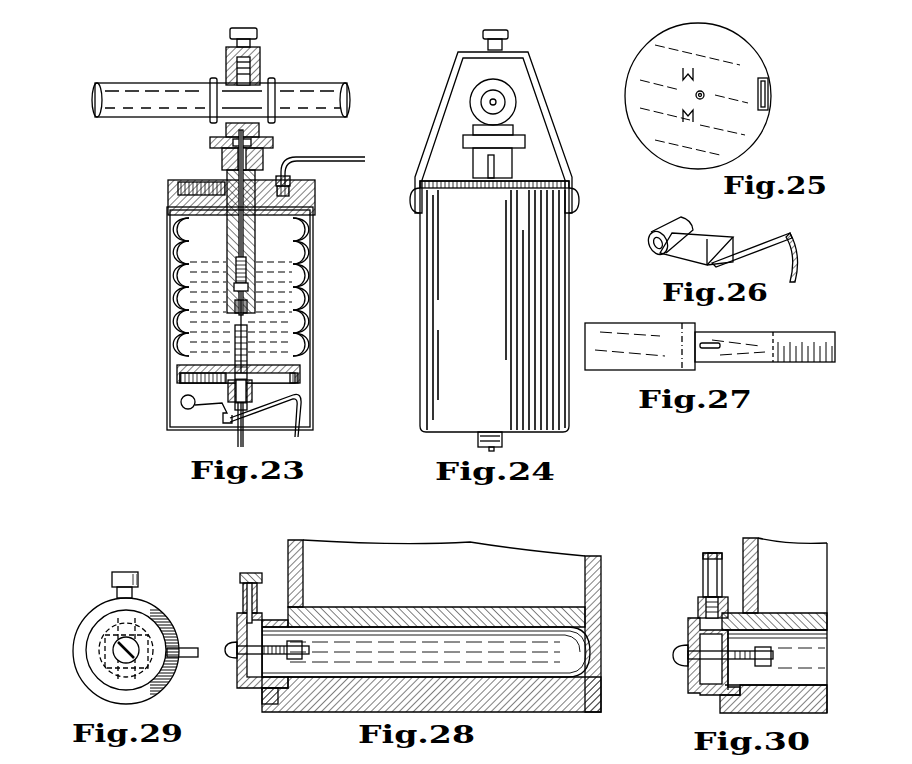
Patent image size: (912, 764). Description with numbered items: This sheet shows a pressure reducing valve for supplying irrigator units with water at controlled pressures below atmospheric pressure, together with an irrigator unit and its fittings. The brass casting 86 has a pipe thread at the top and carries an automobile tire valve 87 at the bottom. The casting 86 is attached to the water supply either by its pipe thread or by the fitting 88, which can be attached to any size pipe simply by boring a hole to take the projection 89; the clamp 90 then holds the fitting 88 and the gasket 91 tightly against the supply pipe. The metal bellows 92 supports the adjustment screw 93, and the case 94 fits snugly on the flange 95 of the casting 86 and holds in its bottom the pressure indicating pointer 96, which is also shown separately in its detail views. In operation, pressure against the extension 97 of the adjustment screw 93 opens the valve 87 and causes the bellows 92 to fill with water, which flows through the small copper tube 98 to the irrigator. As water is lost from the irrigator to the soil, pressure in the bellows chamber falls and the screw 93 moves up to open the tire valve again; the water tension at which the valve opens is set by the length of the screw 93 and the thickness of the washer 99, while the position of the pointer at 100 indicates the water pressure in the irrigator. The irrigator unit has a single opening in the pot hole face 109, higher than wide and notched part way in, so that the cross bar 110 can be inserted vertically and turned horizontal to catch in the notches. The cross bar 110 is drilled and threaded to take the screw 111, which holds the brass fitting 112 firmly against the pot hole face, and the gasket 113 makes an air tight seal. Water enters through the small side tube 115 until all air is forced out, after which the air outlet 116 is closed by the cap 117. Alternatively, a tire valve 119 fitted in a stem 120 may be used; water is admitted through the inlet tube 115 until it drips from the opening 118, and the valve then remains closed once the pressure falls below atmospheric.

In FIG. 23, the brass casting 86 is at (214, 218).
In FIG. 23, the automobile tire valve 87 is at (233, 318).
In FIG. 23, the fitting 88 is at (273, 142).
In FIG. 24, the fitting 88 is at (514, 153).
In FIG. 23, the projection 89 is at (222, 160).
In FIG. 23, the clamp 90 is at (262, 70).
In FIG. 24, the clamp 90 is at (546, 106).
In FIG. 23, the gasket 91 is at (226, 134).
In FIG. 24, the gasket 91 is at (527, 140).
In FIG. 23, the metal bellows 92 is at (172, 262).
In FIG. 23, the adjustment screw 93 is at (233, 342).
In FIG. 23, the case 94 is at (312, 296).
In FIG. 24, the case 94 is at (422, 306).
In FIG. 23, the flange 95 is at (177, 182).
In FIG. 23, the pressure indicating pointer 96 is at (270, 414).
In FIG. 24, the pressure indicating pointer 96 is at (478, 440).
In FIG. 25, the pressure indicating pointer 96 is at (769, 94).
In FIG. 26, the pressure indicating pointer 96 is at (750, 246).
In FIG. 27, the pressure indicating pointer 96 is at (755, 341).
In FIG. 23, the extension 97 is at (212, 412).
In FIG. 23, the small copper tube 98 is at (328, 161).
In FIG. 23, the washer 99 is at (253, 392).
In FIG. 23, the pointer position 100 is at (300, 436).
In FIG. 24, the pointer position 100 is at (505, 438).
In FIG. 28, the pot hole face 109 is at (262, 690).
In FIG. 29, the pot hole face 109 is at (100, 615).
In FIG. 28, the cross bar 110 is at (292, 666).
In FIG. 29, the cross bar 110 is at (104, 672).
In FIG. 30, the cross bar 110 is at (770, 672).
In FIG. 28, the screw 111 is at (230, 660).
In FIG. 30, the screw 111 is at (678, 668).
In FIG. 28, the brass fitting 112 is at (270, 706).
In FIG. 29, the brass fitting 112 is at (160, 612).
In FIG. 30, the brass fitting 112 is at (690, 690).
In FIG. 28, the gasket 113 is at (262, 668).
In FIG. 29, the small side tube 115 is at (190, 646).
In FIG. 28, the air outlet 116 is at (243, 597).
In FIG. 28, the cap 117 is at (250, 574).
In FIG. 29, the cap 117 is at (135, 574).
In FIG. 30, the opening 118 is at (714, 553).
In FIG. 30, the tire valve 119 is at (703, 570).
In FIG. 30, the stem 120 is at (698, 608).